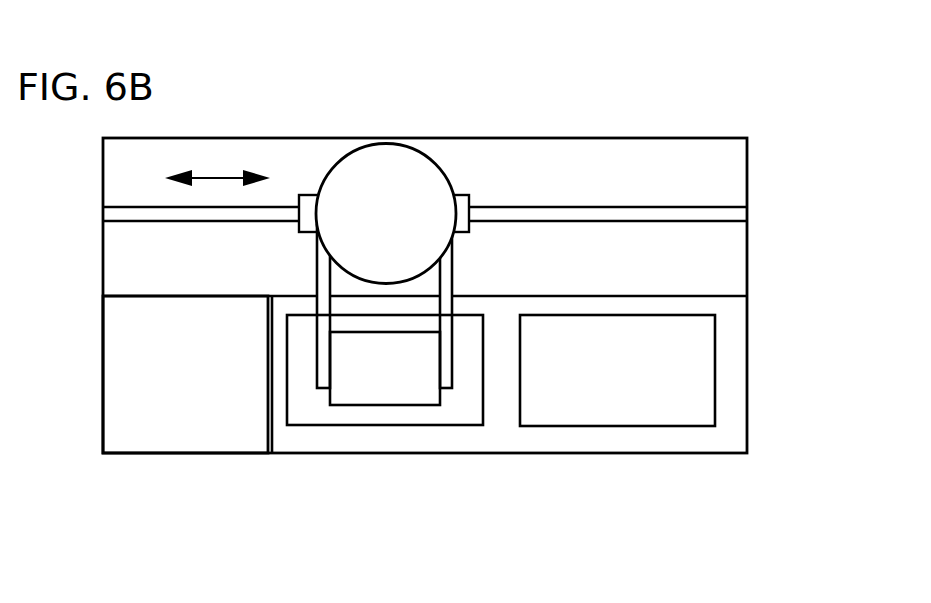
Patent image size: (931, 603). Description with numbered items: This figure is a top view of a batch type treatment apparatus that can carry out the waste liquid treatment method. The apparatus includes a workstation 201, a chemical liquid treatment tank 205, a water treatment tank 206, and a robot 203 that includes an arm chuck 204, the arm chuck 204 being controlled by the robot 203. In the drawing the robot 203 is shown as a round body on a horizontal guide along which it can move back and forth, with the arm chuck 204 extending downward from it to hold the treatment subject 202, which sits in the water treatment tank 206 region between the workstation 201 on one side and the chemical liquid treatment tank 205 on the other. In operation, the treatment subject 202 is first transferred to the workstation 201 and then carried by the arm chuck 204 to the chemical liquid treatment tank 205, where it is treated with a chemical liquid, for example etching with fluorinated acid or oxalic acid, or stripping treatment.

The workstation 201 is at (198, 392).
The treatment subject 202 is at (407, 380).
The robot 203 is at (393, 172).
The arm chuck 204 is at (443, 323).
The chemical liquid treatment tank 205 is at (625, 374).
The water treatment tank 206 is at (328, 410).